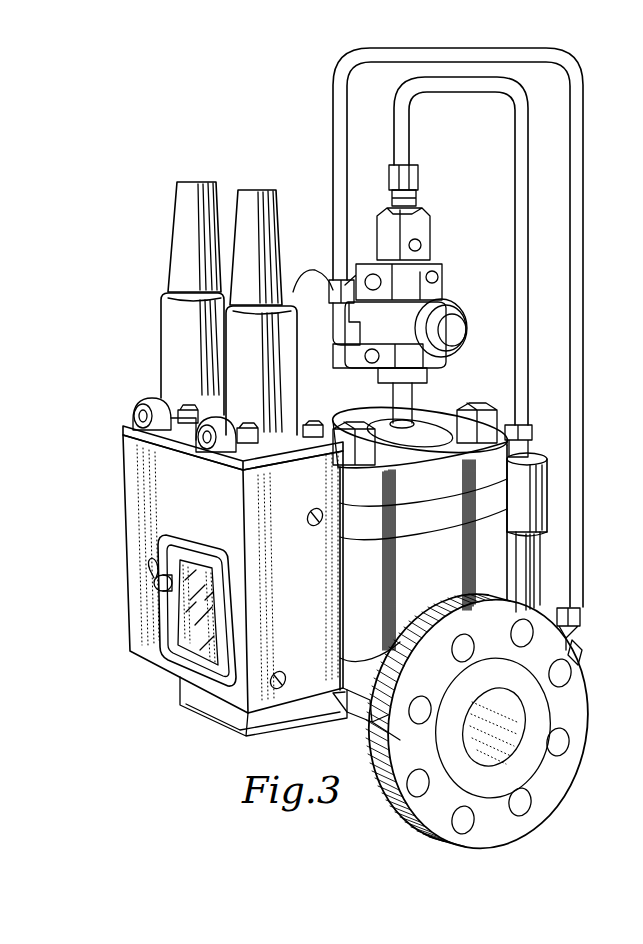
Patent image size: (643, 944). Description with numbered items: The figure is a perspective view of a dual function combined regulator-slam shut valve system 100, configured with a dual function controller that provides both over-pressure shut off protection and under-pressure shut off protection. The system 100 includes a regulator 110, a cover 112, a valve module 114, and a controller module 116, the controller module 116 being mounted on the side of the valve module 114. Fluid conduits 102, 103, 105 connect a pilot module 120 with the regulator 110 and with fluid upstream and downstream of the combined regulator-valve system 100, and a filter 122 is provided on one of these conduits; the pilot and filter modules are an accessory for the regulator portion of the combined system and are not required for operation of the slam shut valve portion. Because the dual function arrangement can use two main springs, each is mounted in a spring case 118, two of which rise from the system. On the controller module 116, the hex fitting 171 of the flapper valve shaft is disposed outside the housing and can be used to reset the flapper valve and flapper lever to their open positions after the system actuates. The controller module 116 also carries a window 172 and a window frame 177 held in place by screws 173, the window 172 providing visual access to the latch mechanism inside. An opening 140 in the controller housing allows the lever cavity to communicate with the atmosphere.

The combined regulator-slam shut valve system 100 is at (266, 119).
The fluid conduit 102 is at (522, 283).
The fluid conduit 103 is at (575, 310).
The fluid conduit 105 is at (414, 395).
The regulator 110 is at (493, 492).
The cover 112 is at (493, 462).
The valve module 114 is at (502, 558).
The controller module 116 is at (143, 512).
The spring case 118 is at (178, 335).
The pilot module 120 is at (455, 330).
The filter 122 is at (538, 507).
The opening 140 is at (290, 688).
The hex fitting 171 is at (152, 584).
The window 172 is at (178, 667).
The screws 173 is at (213, 563).
The window frame 177 is at (213, 615).